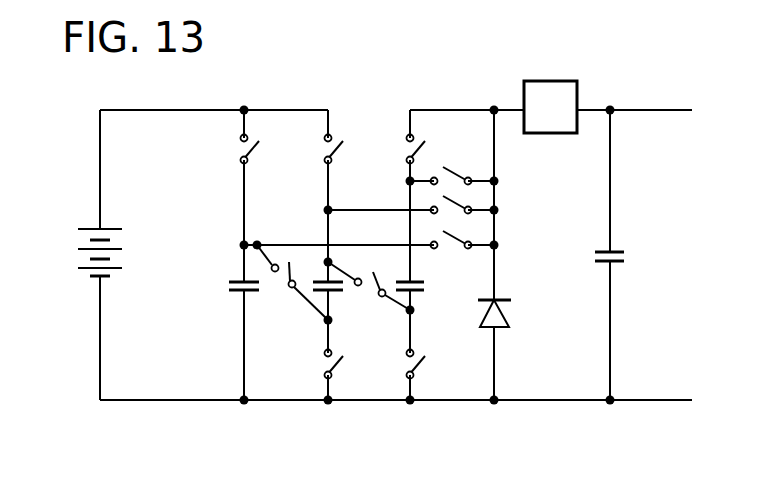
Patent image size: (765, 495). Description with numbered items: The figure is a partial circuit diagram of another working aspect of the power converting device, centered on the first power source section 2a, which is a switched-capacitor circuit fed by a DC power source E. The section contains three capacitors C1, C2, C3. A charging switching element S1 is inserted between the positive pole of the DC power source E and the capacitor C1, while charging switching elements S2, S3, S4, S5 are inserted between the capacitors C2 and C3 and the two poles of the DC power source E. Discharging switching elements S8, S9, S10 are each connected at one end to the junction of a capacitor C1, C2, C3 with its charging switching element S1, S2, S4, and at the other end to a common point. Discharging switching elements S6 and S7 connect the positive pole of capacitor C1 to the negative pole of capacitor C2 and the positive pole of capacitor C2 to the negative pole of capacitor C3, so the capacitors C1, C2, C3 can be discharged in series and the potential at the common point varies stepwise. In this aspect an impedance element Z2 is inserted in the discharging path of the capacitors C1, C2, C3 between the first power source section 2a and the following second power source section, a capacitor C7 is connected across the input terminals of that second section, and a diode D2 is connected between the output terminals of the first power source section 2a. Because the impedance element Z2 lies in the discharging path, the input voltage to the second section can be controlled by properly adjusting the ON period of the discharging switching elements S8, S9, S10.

The first power source section 2a is at (305, 105).
The DC power source E is at (107, 232).
The charging switching element S1 is at (226, 149).
The charging switching element S2 is at (306, 149).
The charging switching element S3 is at (309, 366).
The charging switching element S4 is at (391, 150).
The charging switching element S5 is at (388, 366).
The discharging switching element S6 is at (292, 291).
The discharging switching element S7 is at (369, 299).
The discharging switching element S8 is at (452, 159).
The discharging switching element S9 is at (458, 203).
The discharging switching element S10 is at (458, 240).
The capacitor C1 is at (223, 289).
The capacitor C2 is at (321, 280).
The capacitor C3 is at (433, 289).
The capacitor C7 is at (634, 257).
The diode D2 is at (519, 314).
The impedance element Z2 is at (548, 81).